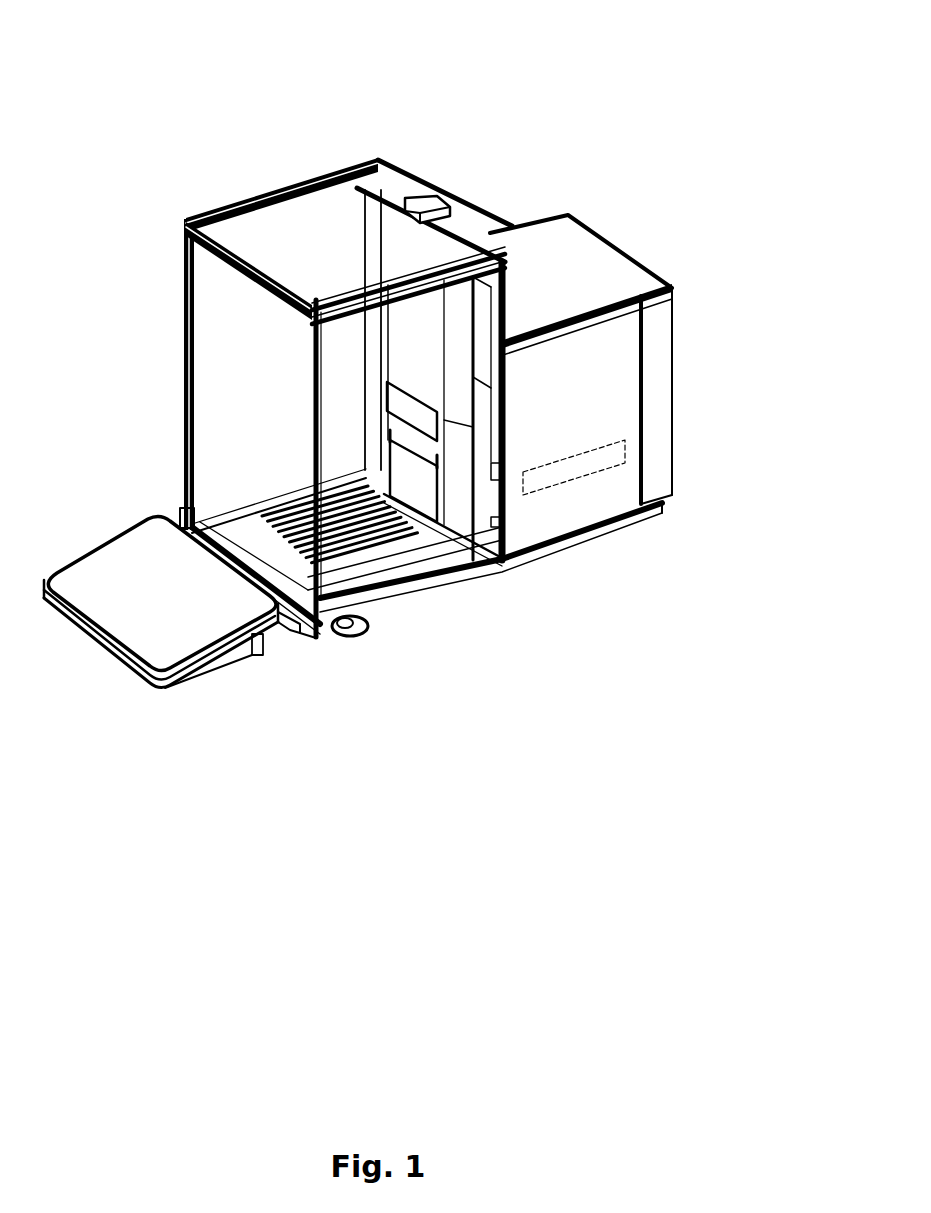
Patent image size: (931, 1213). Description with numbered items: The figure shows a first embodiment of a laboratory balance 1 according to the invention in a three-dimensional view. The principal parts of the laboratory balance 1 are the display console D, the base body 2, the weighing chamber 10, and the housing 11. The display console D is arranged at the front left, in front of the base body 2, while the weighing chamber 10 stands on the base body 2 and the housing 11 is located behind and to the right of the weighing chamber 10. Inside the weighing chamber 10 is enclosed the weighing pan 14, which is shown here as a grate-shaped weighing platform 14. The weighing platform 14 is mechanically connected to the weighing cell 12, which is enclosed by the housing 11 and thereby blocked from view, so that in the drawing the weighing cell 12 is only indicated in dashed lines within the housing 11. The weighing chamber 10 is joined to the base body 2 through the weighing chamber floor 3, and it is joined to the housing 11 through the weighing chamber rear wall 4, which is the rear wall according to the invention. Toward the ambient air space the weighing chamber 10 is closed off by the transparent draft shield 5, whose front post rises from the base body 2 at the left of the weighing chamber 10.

The laboratory balance 1 is at (411, 432).
The base body 2 is at (543, 558).
The weighing chamber floor 3 is at (288, 562).
The weighing chamber rear wall 4 is at (467, 222).
The transparent draft shield 5 is at (187, 217).
The weighing chamber 10 is at (302, 418).
The housing 11 is at (634, 336).
The weighing cell 12 is at (628, 452).
The weighing pan 14 is at (392, 548).
The display console D is at (172, 622).